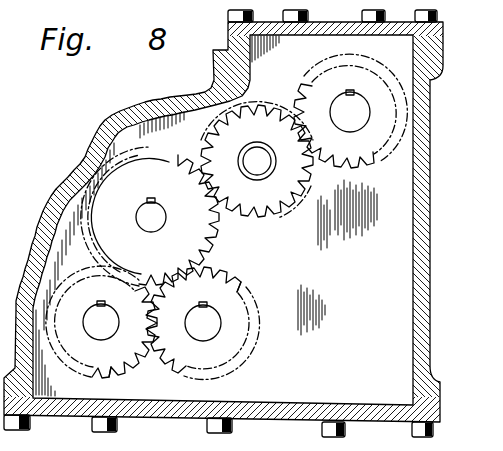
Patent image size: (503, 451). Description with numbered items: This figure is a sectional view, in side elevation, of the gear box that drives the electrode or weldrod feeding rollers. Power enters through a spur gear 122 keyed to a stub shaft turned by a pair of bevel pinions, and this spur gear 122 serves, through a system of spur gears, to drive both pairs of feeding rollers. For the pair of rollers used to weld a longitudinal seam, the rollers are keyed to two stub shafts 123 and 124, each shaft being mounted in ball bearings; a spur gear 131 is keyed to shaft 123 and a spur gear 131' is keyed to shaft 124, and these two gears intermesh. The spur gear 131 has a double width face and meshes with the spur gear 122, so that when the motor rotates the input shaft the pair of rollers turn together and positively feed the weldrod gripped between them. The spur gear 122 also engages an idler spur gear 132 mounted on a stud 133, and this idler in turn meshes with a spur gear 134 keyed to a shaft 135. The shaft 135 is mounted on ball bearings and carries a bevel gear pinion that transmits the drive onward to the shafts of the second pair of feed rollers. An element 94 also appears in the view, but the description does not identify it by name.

The gear housing 94 is at (430, 136).
The spur gear 122 is at (217, 245).
The stub shaft 123 is at (201, 338).
The stub shaft 124 is at (99, 335).
The spur gear 131 is at (272, 285).
The spur gear 131' is at (141, 383).
The idler spur gear 132 is at (313, 185).
The stud 133 is at (251, 166).
The spur gear 134 is at (366, 204).
The shaft 135 is at (345, 120).